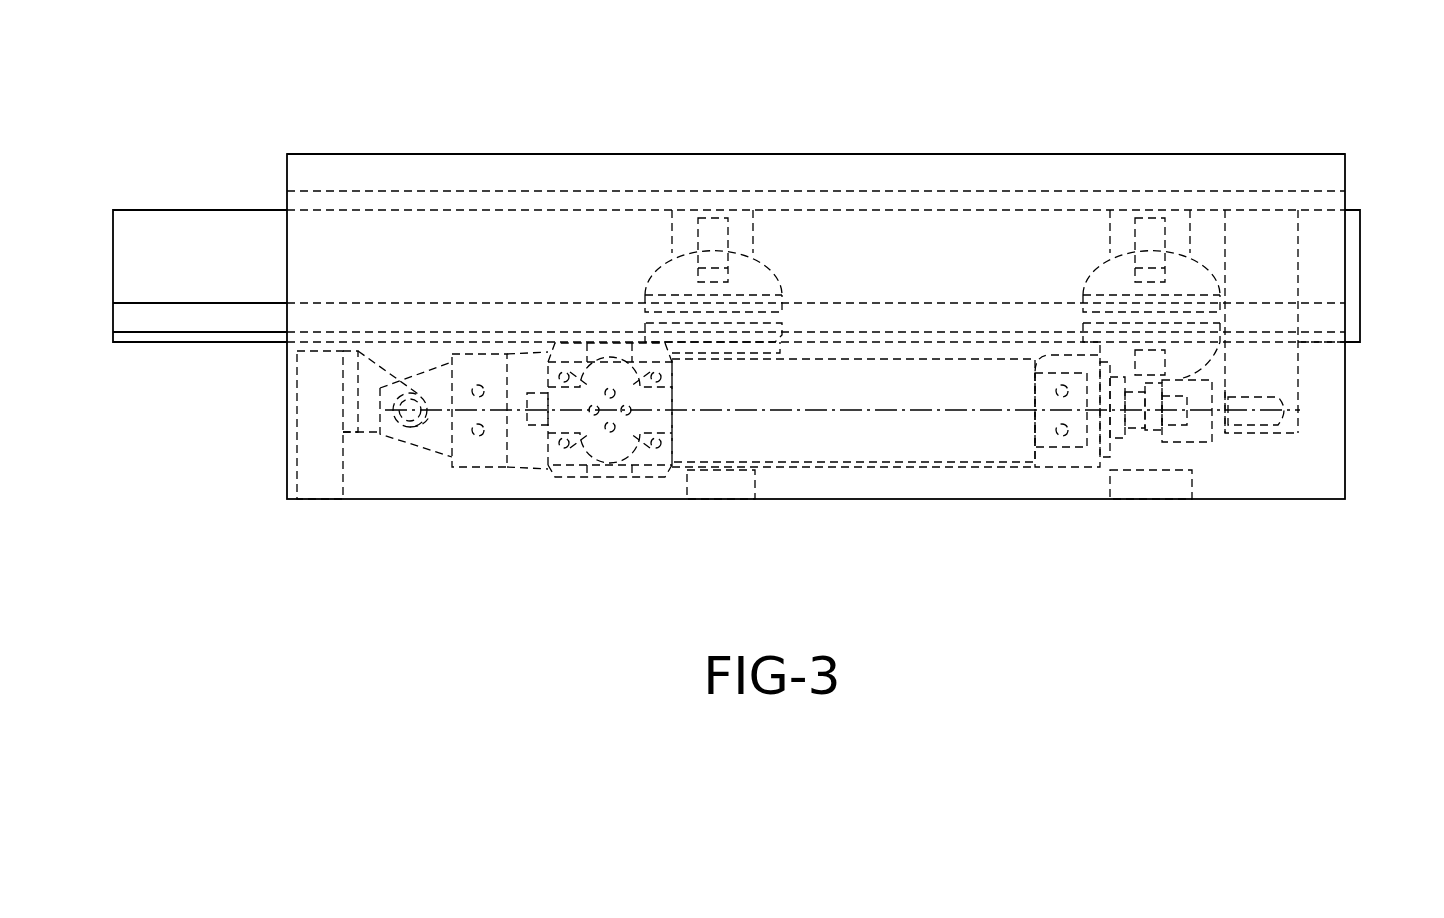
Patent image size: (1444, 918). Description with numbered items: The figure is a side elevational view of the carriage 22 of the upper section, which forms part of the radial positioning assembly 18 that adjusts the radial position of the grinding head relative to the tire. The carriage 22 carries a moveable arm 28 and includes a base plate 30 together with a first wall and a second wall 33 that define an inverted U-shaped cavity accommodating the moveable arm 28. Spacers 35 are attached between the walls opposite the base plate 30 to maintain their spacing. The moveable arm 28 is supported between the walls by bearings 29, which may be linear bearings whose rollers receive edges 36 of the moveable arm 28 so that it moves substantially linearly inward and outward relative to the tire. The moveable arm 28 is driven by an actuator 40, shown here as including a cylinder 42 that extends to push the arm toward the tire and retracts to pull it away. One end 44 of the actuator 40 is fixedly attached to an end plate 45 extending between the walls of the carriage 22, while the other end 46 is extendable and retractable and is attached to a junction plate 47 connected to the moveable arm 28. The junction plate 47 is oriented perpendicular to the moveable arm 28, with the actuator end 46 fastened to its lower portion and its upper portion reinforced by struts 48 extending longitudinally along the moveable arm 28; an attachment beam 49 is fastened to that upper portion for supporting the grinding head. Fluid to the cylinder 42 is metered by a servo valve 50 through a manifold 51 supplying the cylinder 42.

The radial positioning assembly 18 is at (268, 162).
The carriage 22 is at (980, 498).
The moveable arm 28 is at (156, 302).
The bearings 29 is at (660, 282).
The base plate 30 is at (370, 173).
The second wall 33 is at (423, 470).
The spacers 35 is at (712, 487).
The edges 36 is at (192, 318).
The actuator 40 is at (797, 462).
The cylinder 42 is at (858, 432).
The one end of the actuator 44 is at (365, 438).
The end plate 45 is at (318, 478).
The other end of the actuator 46 is at (1200, 438).
The junction plate 47 is at (1277, 365).
The struts 48 is at (222, 228).
The attachment beam 49 is at (1350, 276).
The servo valve 50 is at (610, 442).
The manifold 51 is at (540, 422).